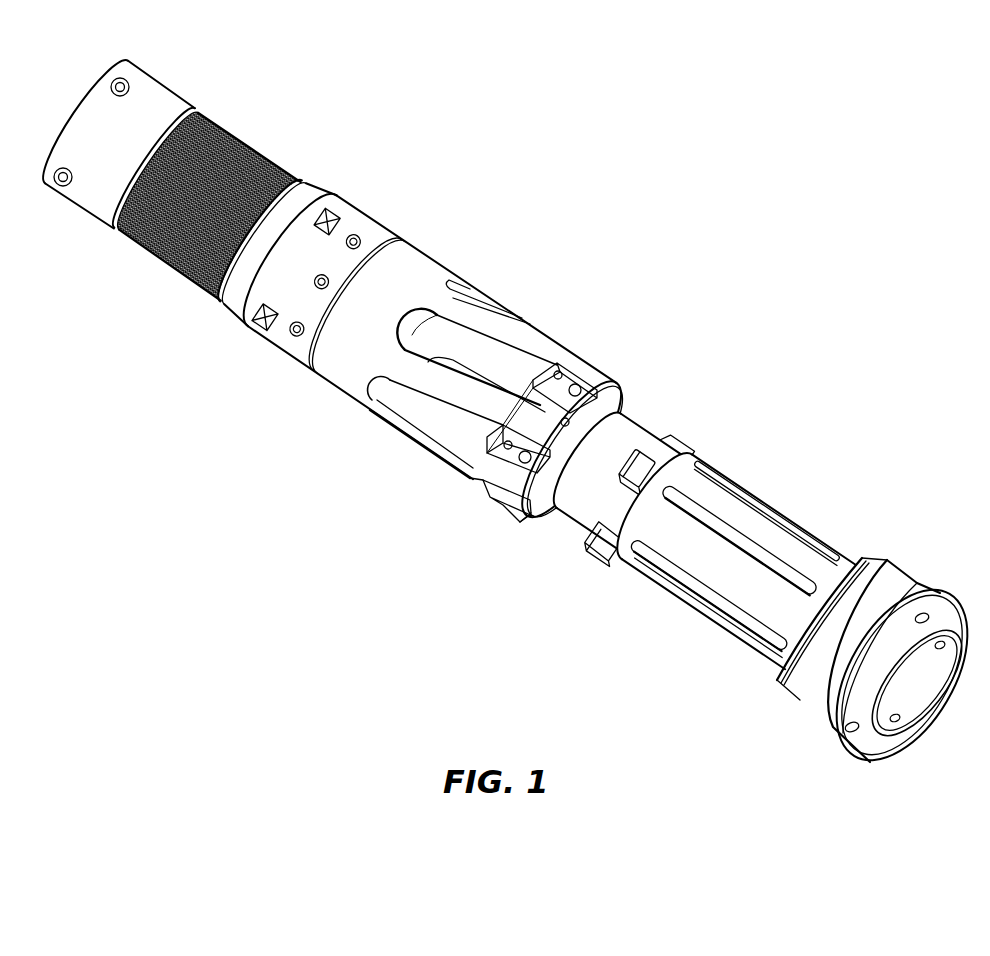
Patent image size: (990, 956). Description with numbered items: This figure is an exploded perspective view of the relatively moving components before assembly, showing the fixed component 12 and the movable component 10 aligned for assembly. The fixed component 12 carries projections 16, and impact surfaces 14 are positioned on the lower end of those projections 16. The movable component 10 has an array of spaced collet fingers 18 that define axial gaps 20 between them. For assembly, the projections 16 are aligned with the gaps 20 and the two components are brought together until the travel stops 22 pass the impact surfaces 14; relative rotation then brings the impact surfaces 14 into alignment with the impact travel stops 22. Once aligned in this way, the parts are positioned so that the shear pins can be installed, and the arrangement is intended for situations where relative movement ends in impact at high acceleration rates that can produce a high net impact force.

The movable component 10 is at (819, 487).
The fixed component 12 is at (497, 254).
The impact surfaces 14 is at (697, 452).
The projections 16 is at (647, 477).
The collet fingers 18 is at (498, 338).
The axial gaps 20 is at (392, 395).
The travel stops 22 is at (540, 393).